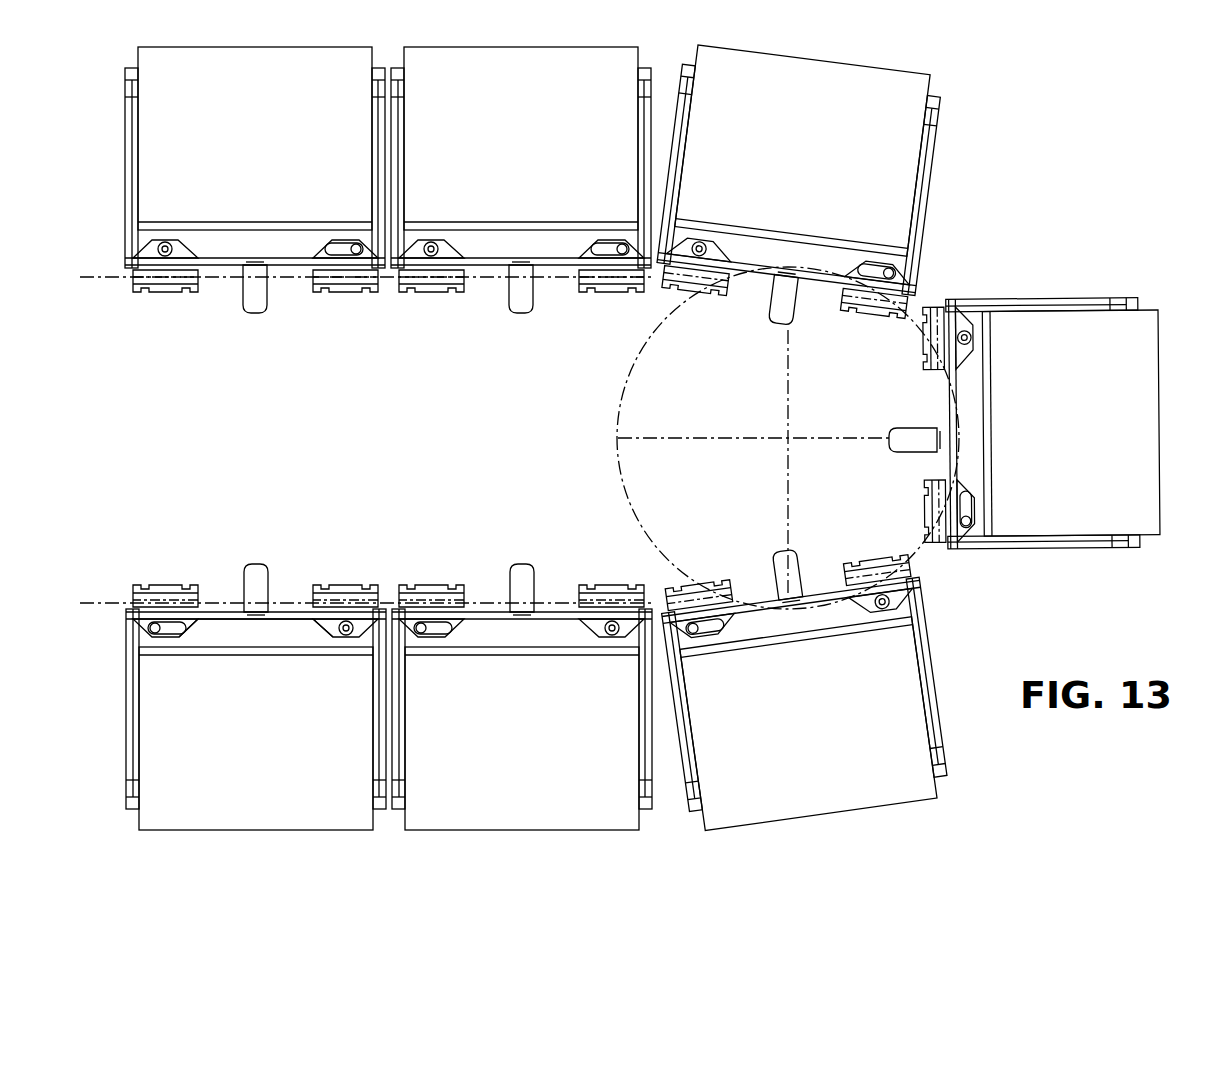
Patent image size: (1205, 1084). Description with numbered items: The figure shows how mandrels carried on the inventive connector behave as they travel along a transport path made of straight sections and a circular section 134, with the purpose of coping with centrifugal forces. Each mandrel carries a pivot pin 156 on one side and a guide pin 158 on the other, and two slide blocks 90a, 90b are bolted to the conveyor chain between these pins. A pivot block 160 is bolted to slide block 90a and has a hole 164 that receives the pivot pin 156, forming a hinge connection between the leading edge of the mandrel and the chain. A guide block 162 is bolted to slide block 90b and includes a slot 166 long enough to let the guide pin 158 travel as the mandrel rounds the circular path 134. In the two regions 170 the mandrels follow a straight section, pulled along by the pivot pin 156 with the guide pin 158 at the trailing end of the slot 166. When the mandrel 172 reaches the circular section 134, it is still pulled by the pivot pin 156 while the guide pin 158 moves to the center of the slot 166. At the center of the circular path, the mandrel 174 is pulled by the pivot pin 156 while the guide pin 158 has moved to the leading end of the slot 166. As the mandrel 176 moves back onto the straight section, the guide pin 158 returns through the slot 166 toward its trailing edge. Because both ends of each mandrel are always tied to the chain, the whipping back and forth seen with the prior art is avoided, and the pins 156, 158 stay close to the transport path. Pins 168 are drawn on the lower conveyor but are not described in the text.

The slide block 90a is at (372, 588).
The slide block 90b is at (228, 568).
The circular section of the transport path 134 is at (668, 553).
The pivot pin 156 is at (163, 242).
The guide pin 158 is at (352, 243).
The pivot block 160 is at (321, 633).
The guide block 162 is at (191, 632).
The hole 164 is at (338, 637).
The slot 166 is at (336, 246).
The drive pin 168 is at (258, 566).
The straight section regions 170 is at (640, 523).
The mandrel 172 is at (836, 753).
The mandrel 174 is at (1106, 437).
The mandrel 176 is at (828, 172).